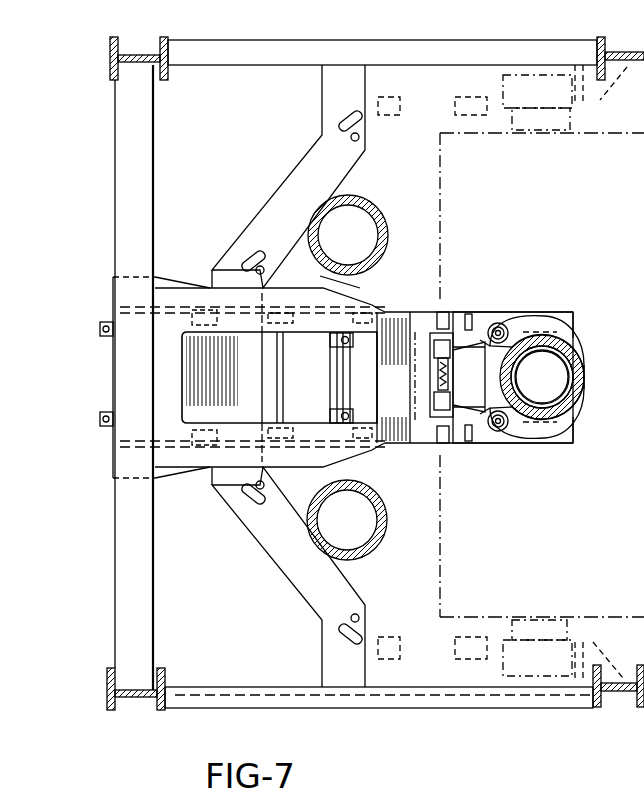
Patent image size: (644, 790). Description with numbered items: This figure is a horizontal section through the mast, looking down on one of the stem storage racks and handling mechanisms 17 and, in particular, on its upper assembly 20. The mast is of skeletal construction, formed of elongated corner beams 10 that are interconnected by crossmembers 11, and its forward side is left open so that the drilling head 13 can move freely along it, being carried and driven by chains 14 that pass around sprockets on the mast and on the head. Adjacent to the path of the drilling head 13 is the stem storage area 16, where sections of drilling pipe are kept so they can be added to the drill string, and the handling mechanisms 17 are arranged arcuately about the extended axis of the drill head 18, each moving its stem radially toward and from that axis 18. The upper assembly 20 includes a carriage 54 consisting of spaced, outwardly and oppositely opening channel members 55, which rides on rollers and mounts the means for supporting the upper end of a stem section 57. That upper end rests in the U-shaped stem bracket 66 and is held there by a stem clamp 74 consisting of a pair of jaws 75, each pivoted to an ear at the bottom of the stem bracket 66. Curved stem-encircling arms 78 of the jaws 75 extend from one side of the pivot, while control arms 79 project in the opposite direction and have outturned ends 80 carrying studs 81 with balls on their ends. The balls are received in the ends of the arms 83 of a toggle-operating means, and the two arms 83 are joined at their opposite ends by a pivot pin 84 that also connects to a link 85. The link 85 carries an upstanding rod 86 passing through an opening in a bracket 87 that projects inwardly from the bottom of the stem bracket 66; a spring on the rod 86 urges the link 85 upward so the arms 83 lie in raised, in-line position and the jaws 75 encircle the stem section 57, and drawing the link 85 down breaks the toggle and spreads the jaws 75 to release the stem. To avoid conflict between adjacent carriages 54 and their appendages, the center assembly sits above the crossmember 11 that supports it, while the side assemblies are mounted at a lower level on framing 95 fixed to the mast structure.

The corner beams 10 is at (632, 45).
The crossmembers 11 is at (438, 38).
The drilling head 13 is at (632, 125).
The chains 14 is at (462, 97).
The stem storage area 16 is at (418, 232).
The stem storage racks and handling mechanisms 17 is at (200, 305).
The extended axis of the drill head 18 is at (567, 372).
The upper assembly 20 is at (521, 300).
The carriage 54 is at (590, 309).
The channel members 55 is at (321, 272).
The stem section 57 is at (365, 202).
The stem bracket 66 is at (572, 394).
The stem clamp 74 is at (562, 308).
The jaws 75 is at (528, 316).
The stem-encircling arms 78 is at (567, 340).
The control arms 79 is at (497, 322).
The outturned ends 80 is at (468, 314).
The studs 81 is at (443, 312).
The arms of toggle-operating means 83 is at (436, 333).
The pivot pin 84 is at (440, 375).
The link 85 is at (425, 366).
The upstanding rod 86 is at (440, 403).
The bracket 87 is at (512, 368).
The framing 95 is at (310, 152).